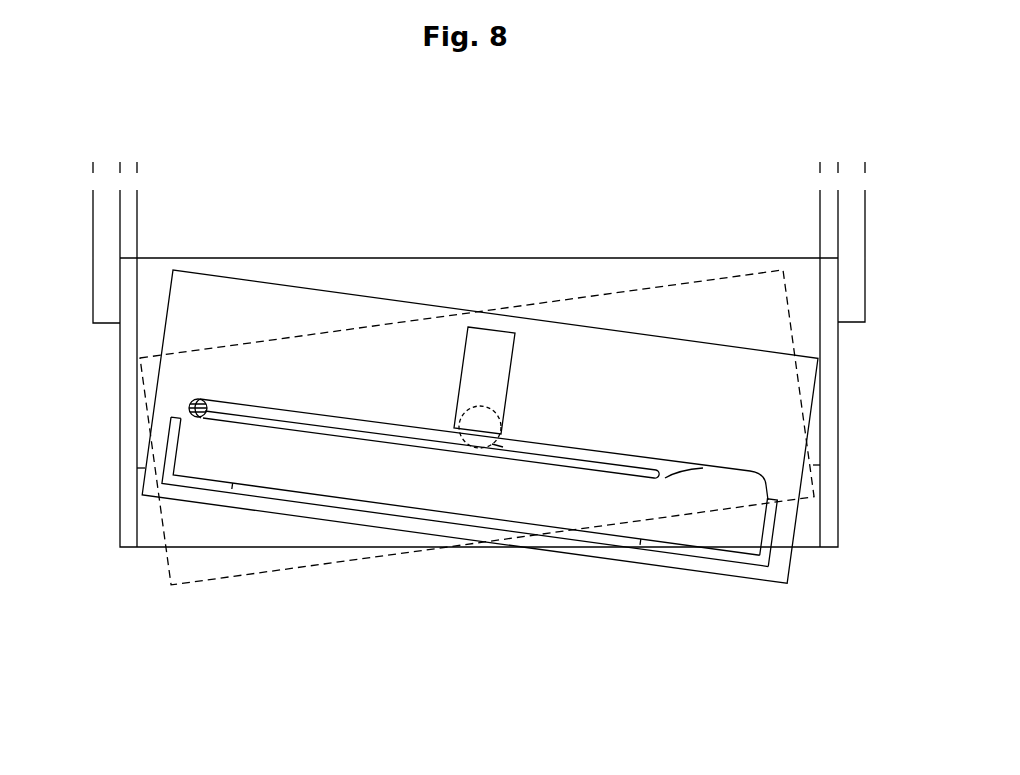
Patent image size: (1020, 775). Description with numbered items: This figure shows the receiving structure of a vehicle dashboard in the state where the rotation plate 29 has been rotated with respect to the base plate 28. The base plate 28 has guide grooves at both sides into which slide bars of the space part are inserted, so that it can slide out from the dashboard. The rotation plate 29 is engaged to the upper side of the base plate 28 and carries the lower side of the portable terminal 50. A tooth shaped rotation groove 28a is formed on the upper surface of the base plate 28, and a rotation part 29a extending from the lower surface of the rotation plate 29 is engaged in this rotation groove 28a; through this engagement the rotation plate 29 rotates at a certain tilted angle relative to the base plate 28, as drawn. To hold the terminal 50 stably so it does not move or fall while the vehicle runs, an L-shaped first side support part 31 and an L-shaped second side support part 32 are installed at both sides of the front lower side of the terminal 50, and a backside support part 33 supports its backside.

The base plate 28 is at (470, 281).
The rotation groove 28a is at (455, 423).
The rotation plate 29 is at (778, 563).
The rotation part 29a is at (503, 470).
The first side support part 31 is at (142, 476).
The second side support part 32 is at (768, 523).
The backside support part 33 is at (490, 418).
The portable terminal 50 is at (342, 490).